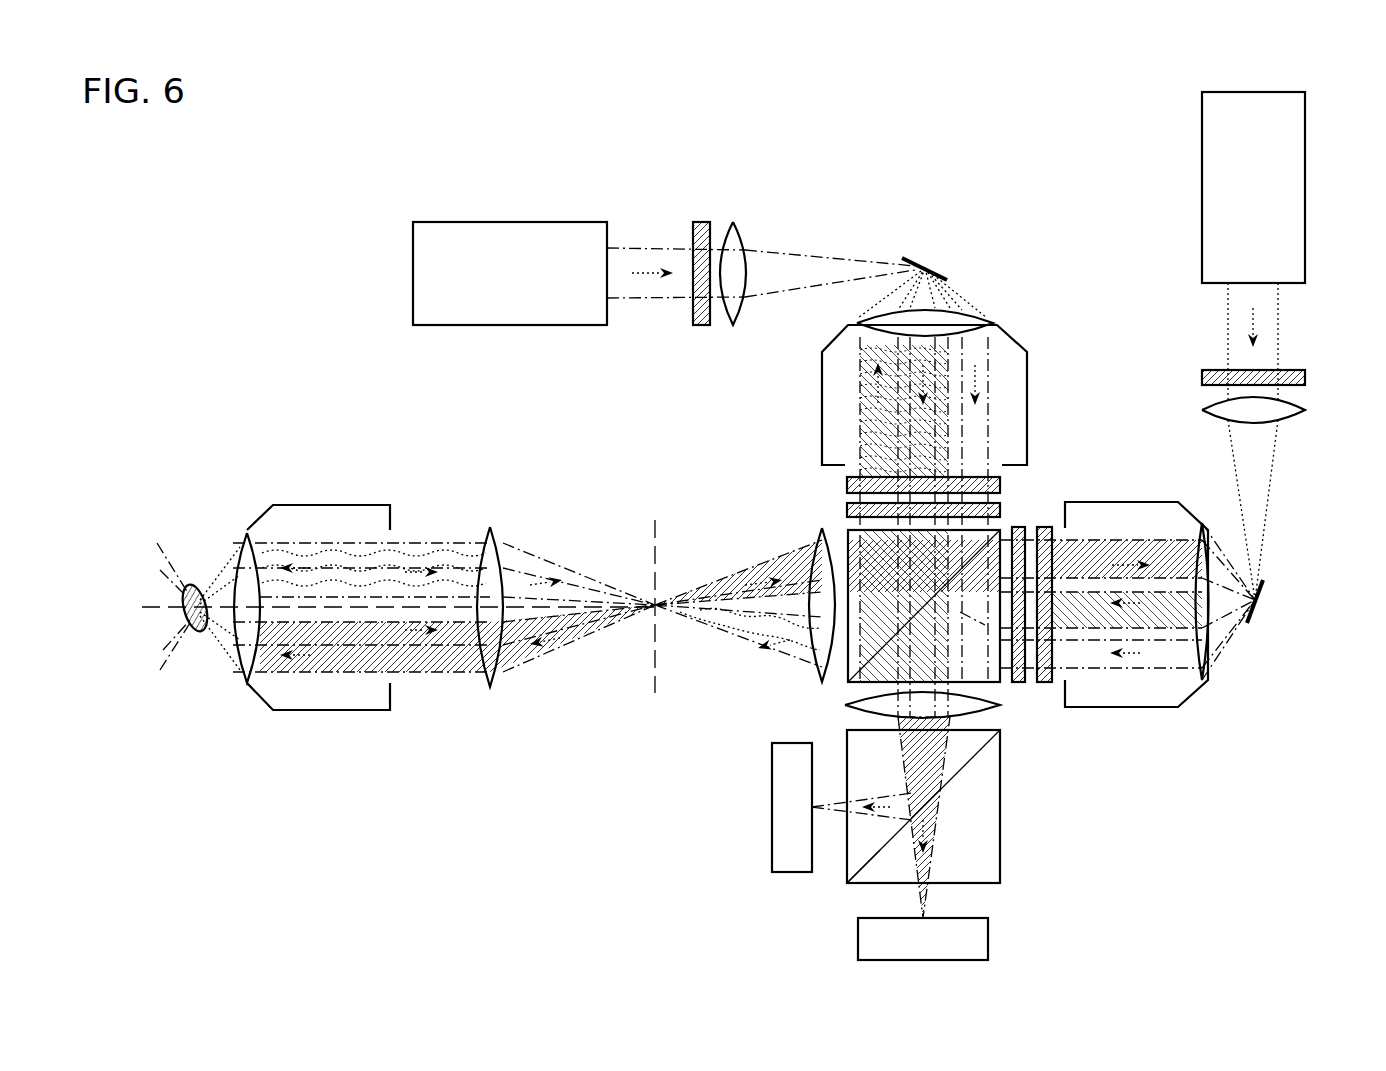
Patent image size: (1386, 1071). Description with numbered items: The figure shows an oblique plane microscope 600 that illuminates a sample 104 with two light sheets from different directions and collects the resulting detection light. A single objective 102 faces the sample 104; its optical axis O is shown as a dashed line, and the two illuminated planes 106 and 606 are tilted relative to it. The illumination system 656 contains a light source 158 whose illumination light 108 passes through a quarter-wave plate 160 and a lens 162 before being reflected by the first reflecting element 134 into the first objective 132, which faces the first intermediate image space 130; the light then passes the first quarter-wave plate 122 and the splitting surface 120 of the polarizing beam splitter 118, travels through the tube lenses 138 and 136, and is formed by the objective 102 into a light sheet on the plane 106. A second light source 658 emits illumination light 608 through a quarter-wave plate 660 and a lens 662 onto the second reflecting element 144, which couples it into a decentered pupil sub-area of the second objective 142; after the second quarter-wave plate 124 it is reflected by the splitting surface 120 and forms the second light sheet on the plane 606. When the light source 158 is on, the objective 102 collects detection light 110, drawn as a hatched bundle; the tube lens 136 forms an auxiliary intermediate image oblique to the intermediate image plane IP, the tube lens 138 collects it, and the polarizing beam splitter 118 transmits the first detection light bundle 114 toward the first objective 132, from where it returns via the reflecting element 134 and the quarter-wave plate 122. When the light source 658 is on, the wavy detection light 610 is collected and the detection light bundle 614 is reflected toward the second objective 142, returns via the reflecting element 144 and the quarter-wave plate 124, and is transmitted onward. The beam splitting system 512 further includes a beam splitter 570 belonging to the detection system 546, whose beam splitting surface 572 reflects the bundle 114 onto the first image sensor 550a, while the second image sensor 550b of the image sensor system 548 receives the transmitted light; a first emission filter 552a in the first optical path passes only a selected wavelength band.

The oblique plane microscope 600 is at (572, 127).
The illumination system 656 is at (818, 162).
The second light source 658 is at (413, 279).
The illumination light 608 is at (626, 258).
The quarter-wave plate 660 is at (702, 328).
The lens 662 is at (742, 312).
The second reflecting element 144 is at (932, 266).
The second objective 142 is at (1010, 335).
The first detection light bundle 614 is at (870, 350).
The second quarter-wave plate 124 is at (845, 487).
The light source 158 is at (1295, 185).
The quarter-wave plate 160 is at (1305, 377).
The lens 162 is at (1290, 418).
The first reflecting element 134 is at (1266, 582).
The first intermediate image space 130 is at (1246, 622).
The first objective 132 is at (1196, 690).
The first detection light bundle 114 is at (1157, 557).
The first emission filter 552a is at (1018, 525).
The first quarter-wave plate 122 is at (1050, 676).
The splitting surface 120 is at (972, 620).
The objective 102 is at (330, 505).
The detection light 110 is at (248, 684).
The sample 104 is at (197, 585).
The optical axis O is at (145, 605).
The plane 606 is at (160, 575).
The plane 106 is at (160, 644).
The illumination light 108 is at (390, 557).
The detection light 610 is at (463, 573).
The tube lens 136 is at (496, 540).
The intermediate image plane IP is at (655, 540).
The tube lens 138 is at (818, 533).
The polarizing beam splitter 118 is at (857, 681).
The beam splitting system 512 is at (762, 700).
The image sensor system 548 is at (644, 877).
The detection system 546 is at (1178, 838).
The first image sensor 550a is at (772, 809).
The beam splitting surface 572 is at (852, 866).
The beam splitter 570 is at (857, 888).
The second image sensor 550b is at (988, 938).